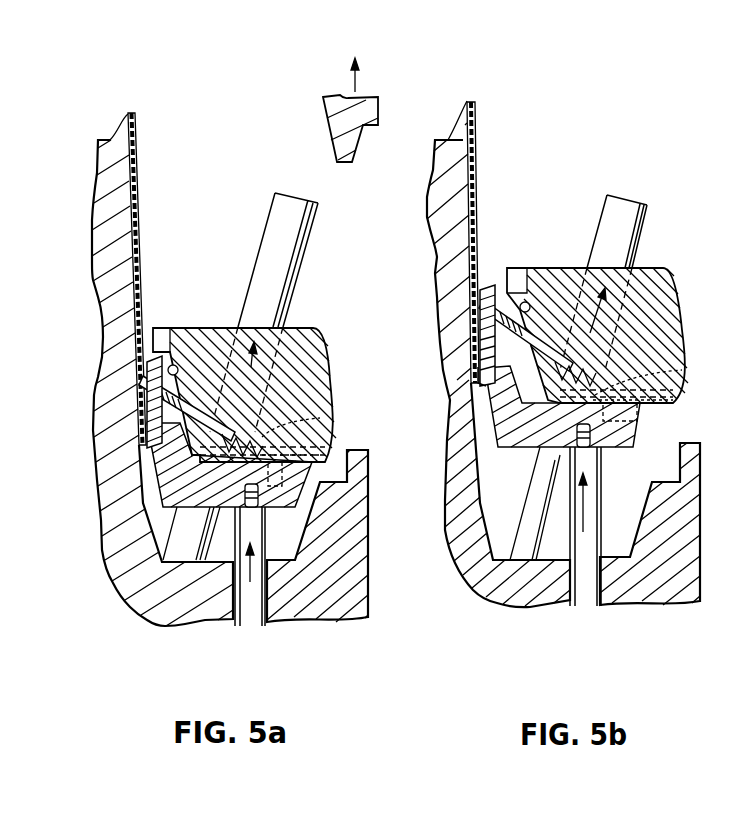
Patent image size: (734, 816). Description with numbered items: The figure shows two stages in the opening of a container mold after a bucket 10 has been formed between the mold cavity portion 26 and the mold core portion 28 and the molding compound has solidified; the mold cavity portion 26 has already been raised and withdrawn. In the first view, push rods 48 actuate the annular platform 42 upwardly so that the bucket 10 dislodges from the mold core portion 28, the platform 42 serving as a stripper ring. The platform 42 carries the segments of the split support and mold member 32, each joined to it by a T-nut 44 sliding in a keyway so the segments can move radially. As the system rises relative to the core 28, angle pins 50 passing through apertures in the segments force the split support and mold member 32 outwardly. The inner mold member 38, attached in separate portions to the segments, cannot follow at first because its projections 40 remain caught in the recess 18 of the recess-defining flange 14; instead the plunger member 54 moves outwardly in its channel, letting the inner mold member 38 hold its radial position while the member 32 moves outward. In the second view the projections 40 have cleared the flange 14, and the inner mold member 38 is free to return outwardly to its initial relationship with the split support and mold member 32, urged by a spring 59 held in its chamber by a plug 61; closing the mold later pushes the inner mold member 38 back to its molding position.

In FIG. 5A, the bucket 10 is at (130, 192).
In FIG. 5B, the bucket 10 is at (477, 178).
In FIG. 5B, the recess-defining flange 14 is at (487, 395).
In FIG. 5B, the recess 18 is at (478, 367).
In FIG. 5A, the mold cavity portion 26 is at (323, 127).
In FIG. 5A, the mold core portion 28 is at (108, 222).
In FIG. 5A, the split support and mold member 32 is at (308, 386).
In FIG. 5B, the split support and mold member 32 is at (656, 340).
In FIG. 5A, the inner mold member 38 is at (143, 407).
In FIG. 5B, the inner mold member 38 is at (478, 313).
In FIG. 5A, the projections 40 is at (150, 430).
In FIG. 5B, the projections 40 is at (482, 355).
In FIG. 5A, the annular platform 42 is at (150, 487).
In FIG. 5B, the T-nut 44 is at (636, 415).
In FIG. 5A, the push rods 48 is at (263, 602).
In FIG. 5A, the angle pins 50 is at (297, 267).
In FIG. 5A, the plunger member 54 is at (203, 413).
In FIG. 5A, the spring 59 is at (262, 437).
In FIG. 5B, the spring 59 is at (595, 395).
In FIG. 5A, the plug 61 is at (262, 455).
In FIG. 5B, the plug 61 is at (593, 400).